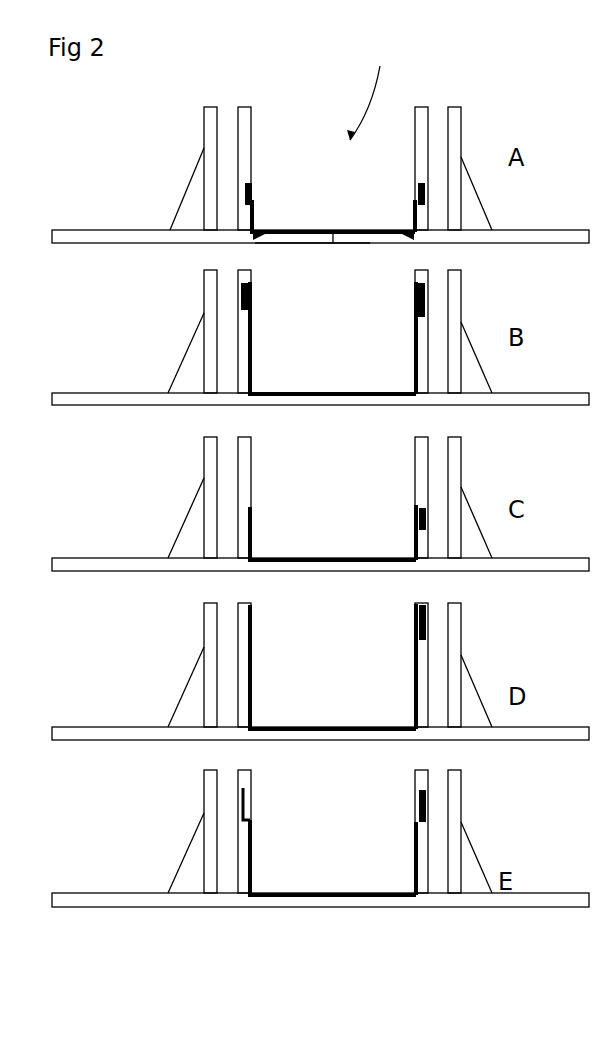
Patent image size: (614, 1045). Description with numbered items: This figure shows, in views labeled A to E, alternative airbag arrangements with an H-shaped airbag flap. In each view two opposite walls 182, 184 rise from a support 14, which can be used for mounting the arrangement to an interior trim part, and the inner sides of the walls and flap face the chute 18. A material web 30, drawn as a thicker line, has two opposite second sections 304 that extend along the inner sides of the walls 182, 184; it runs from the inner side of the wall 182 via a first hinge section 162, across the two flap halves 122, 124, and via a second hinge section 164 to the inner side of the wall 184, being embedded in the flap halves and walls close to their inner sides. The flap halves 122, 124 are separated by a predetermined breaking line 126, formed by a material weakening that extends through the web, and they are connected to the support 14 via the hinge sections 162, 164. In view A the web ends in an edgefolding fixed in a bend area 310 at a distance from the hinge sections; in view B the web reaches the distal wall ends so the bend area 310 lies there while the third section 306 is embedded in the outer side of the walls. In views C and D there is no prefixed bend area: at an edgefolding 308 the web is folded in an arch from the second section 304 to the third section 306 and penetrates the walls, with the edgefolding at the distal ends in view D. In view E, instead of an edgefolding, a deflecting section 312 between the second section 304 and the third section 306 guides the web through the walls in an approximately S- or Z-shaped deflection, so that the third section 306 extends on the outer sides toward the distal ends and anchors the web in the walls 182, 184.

The support 14 is at (552, 238).
The chute 18 is at (368, 91).
The material web 30 is at (290, 230).
The flap half 122 is at (336, 244).
The flap half 124 is at (282, 245).
The predetermined breaking line 126 is at (333, 230).
The first hinge section 162 is at (410, 242).
The second hinge section 164 is at (254, 243).
The wall 182 is at (424, 118).
The wall 184 is at (240, 108).
The second section 304 is at (250, 190).
The third section 306 is at (428, 300).
The edgefolding 308 is at (417, 505).
The bend area 310 is at (246, 184).
The deflecting section 312 is at (416, 822).